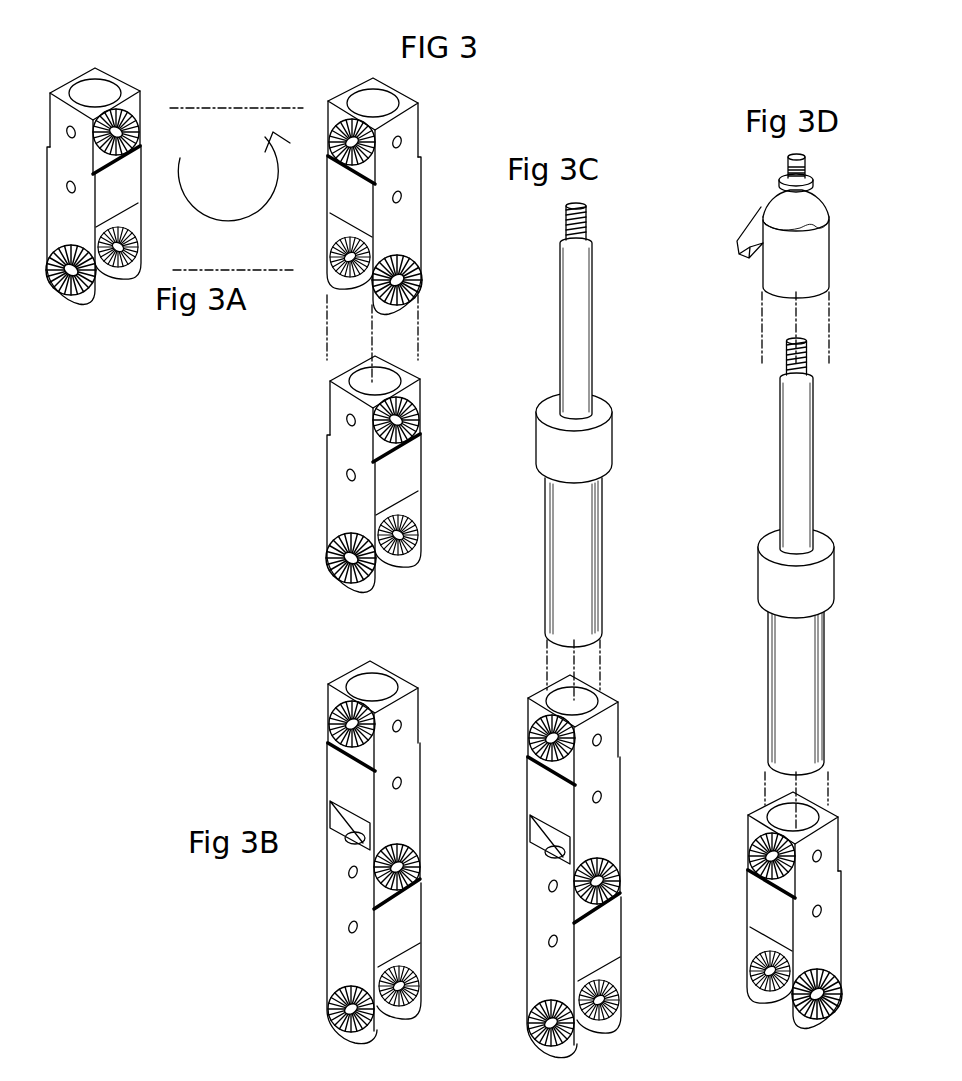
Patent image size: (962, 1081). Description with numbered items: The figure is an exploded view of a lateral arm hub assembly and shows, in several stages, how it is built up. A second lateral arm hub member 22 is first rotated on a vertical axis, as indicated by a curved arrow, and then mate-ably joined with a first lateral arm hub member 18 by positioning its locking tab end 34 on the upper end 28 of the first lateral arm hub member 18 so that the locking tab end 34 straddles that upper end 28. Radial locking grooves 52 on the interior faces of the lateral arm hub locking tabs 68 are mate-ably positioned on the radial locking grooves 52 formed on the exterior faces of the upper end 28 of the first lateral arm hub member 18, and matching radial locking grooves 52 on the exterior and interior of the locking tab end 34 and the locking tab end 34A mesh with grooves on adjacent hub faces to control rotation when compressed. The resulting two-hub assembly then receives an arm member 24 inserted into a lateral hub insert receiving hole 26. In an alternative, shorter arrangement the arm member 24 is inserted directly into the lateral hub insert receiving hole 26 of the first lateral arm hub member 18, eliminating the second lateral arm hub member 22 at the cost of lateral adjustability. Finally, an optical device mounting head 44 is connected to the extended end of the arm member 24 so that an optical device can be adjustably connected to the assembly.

In FIG. 3, the first lateral arm hub member 18 is at (393, 593).
In FIG. 3, the second lateral arm hub member 22 is at (654, 866).
In FIG. 3A, the second lateral arm hub member 22 is at (348, 197).
In FIG. 3D, the second lateral arm hub member 22 is at (771, 865).
In FIG. 3C, the arm member 24 is at (572, 527).
In FIG. 3D, the arm member 24 is at (790, 680).
In FIG. 3, the lateral hub insert receiving hole 26 is at (666, 751).
In FIG. 3D, the lateral hub insert receiving hole 26 is at (761, 766).
In FIG. 3, the upper end 28 is at (375, 419).
In FIG. 3, the locking tab end 34 is at (359, 213).
In FIG. 3, the locking tab end 34A is at (314, 187).
In FIG. 3D, the optical device mounting head 44 is at (783, 260).
In FIG. 3, the radial locking grooves 52 is at (412, 408).
In FIG. 3, the lateral arm hub locking tabs 68 is at (356, 289).